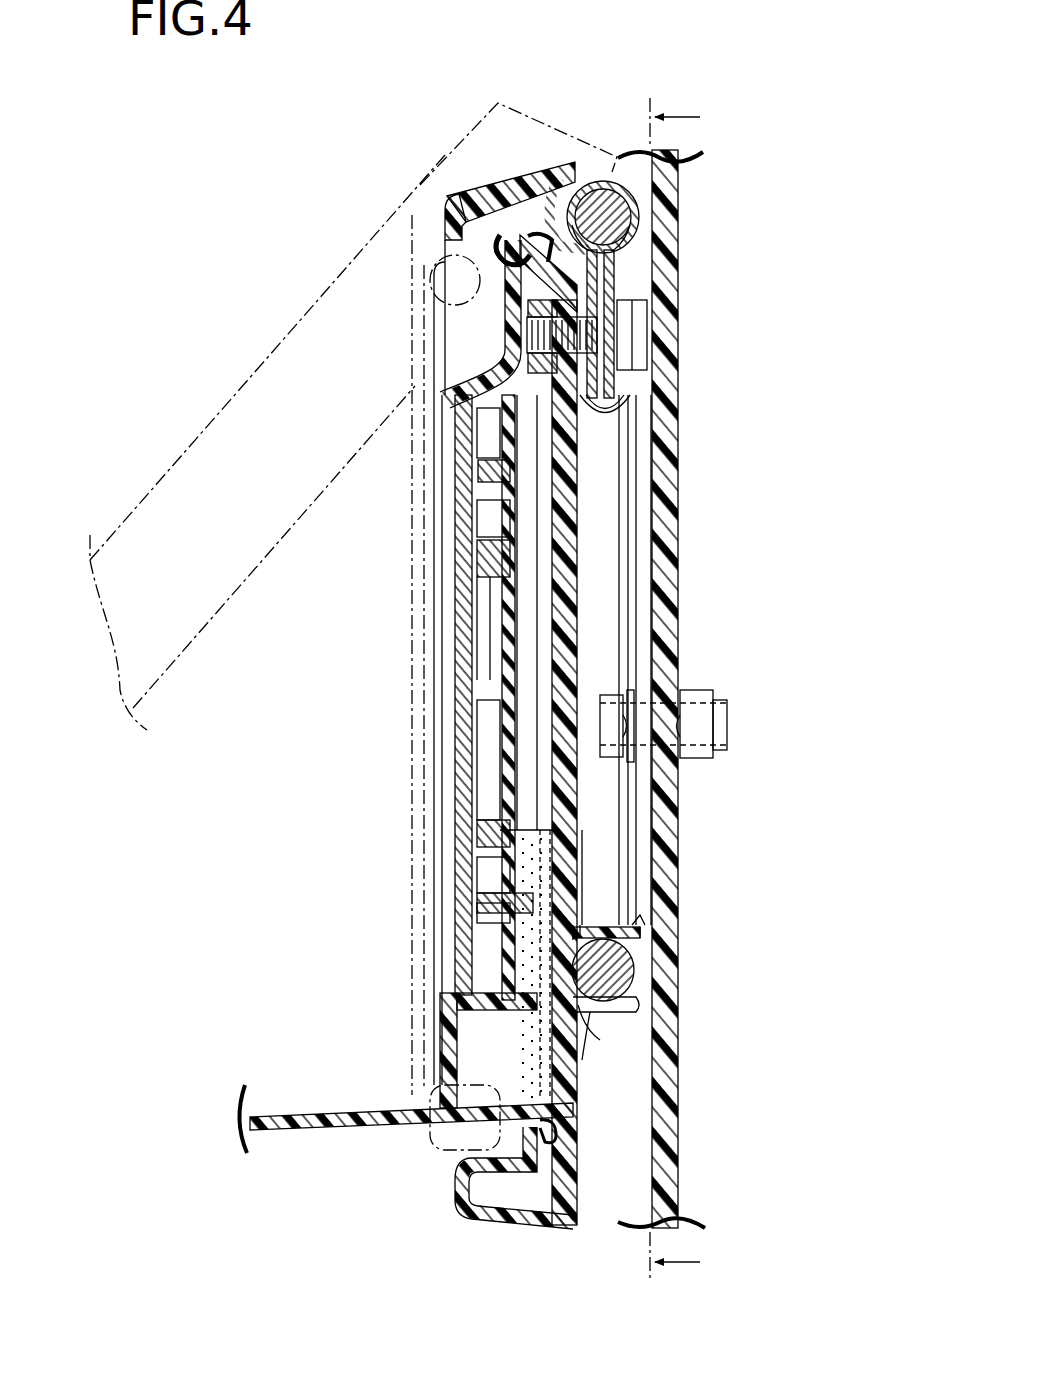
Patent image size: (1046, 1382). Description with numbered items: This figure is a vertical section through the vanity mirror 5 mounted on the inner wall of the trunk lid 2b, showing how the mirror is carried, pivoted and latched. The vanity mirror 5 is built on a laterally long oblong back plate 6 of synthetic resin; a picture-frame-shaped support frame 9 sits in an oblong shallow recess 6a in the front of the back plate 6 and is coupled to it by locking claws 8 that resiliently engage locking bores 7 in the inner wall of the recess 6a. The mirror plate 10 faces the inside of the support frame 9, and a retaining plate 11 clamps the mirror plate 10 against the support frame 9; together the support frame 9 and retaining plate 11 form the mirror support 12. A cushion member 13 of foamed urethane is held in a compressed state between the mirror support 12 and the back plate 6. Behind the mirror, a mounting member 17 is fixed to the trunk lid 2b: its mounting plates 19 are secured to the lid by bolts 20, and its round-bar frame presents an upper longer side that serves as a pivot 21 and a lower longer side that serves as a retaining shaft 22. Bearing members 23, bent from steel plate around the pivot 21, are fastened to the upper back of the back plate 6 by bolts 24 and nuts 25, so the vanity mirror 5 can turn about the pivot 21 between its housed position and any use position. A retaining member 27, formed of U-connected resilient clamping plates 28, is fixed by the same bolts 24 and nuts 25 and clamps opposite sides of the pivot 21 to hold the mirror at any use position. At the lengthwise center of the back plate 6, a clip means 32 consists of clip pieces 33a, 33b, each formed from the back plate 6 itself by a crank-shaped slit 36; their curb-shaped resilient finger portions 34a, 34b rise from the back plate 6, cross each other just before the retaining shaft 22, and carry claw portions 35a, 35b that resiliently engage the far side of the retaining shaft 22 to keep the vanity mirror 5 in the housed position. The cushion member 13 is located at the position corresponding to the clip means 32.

The trunk lid 2b is at (680, 270).
The vanity mirror 5 is at (690, 690).
The back plate 6 is at (578, 492).
The recess 6a is at (460, 212).
The locking claws 8 is at (523, 245).
The locking bores 7 is at (540, 240).
The upper longer side (pivot) 21 is at (638, 205).
The bearing members 23 is at (600, 181).
The resilient clamping plates 28 is at (598, 180).
The bolts 24 is at (635, 332).
The nuts 25 is at (648, 300).
The retaining member 27 is at (632, 408).
The mounting member 17 is at (621, 560).
The mounting plates 19 is at (652, 632).
The bolts 20 is at (708, 735).
The mirror plate 10 is at (462, 745).
The mirror support 12 is at (338, 885).
The retaining plate 11 is at (478, 913).
The support frame 9 is at (460, 985).
The crank-shaped slit 36 is at (500, 835).
The cushion member 13 is at (540, 1050).
The clip piece 33a is at (640, 926).
The claw portion 35a is at (642, 945).
The lower longer side (retaining shaft) 22 is at (640, 980).
The claw portion 35b is at (642, 1003).
The clip piece 33b is at (622, 1005).
The resilient finger portion 34a is at (582, 925).
The resilient finger portion 34b is at (598, 1007).
The clip means 32 is at (627, 906).